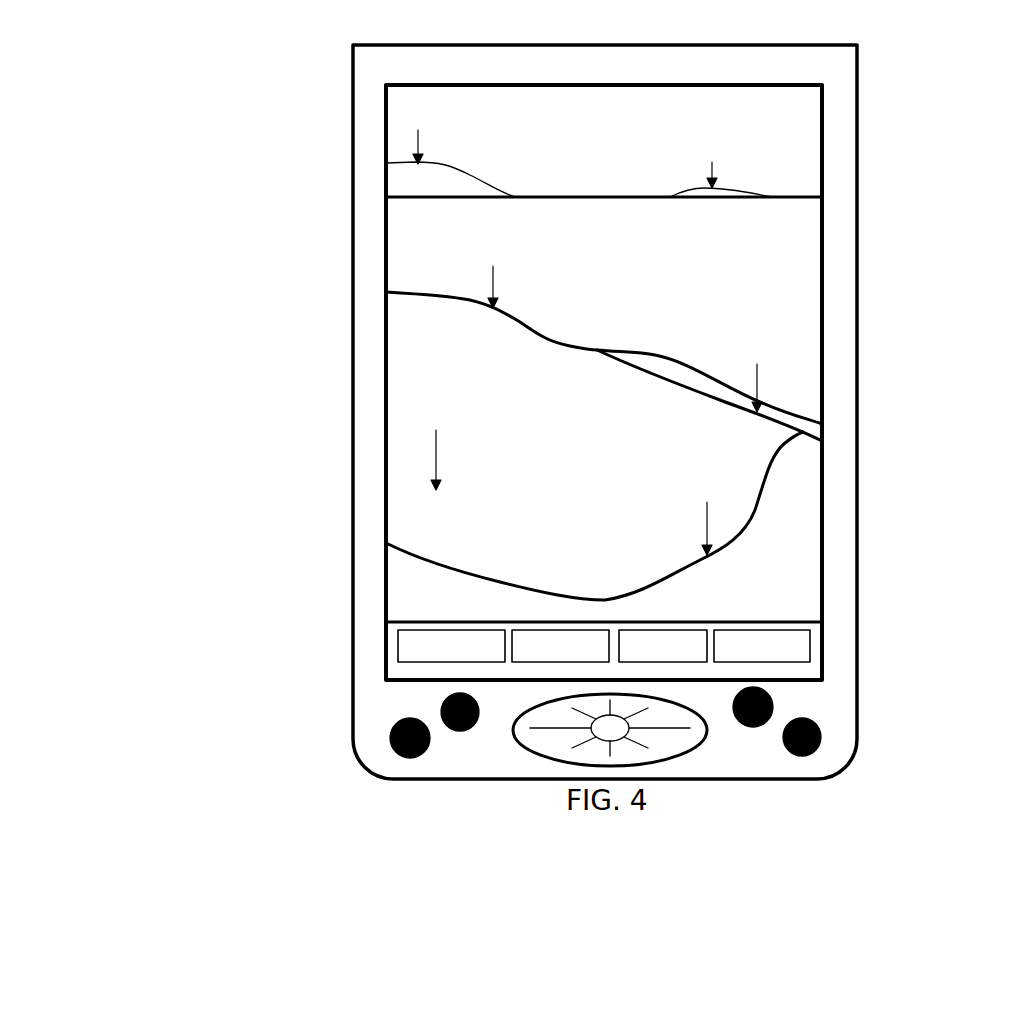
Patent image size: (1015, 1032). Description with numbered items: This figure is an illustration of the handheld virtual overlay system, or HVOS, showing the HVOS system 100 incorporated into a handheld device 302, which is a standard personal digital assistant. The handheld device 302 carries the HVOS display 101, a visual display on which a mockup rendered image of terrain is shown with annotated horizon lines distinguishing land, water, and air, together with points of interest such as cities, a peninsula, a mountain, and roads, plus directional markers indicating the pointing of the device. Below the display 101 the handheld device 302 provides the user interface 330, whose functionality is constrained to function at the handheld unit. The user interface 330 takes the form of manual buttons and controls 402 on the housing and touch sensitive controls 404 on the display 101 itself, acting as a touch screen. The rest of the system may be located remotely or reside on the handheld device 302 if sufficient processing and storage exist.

The handheld virtual overlay system 100 is at (186, 89).
The HVOS display 101 is at (386, 380).
The handheld device 302 is at (352, 278).
The user interface 330 is at (614, 698).
The manual buttons and controls 402 is at (323, 687).
The touch sensitive controls 404 is at (311, 620).